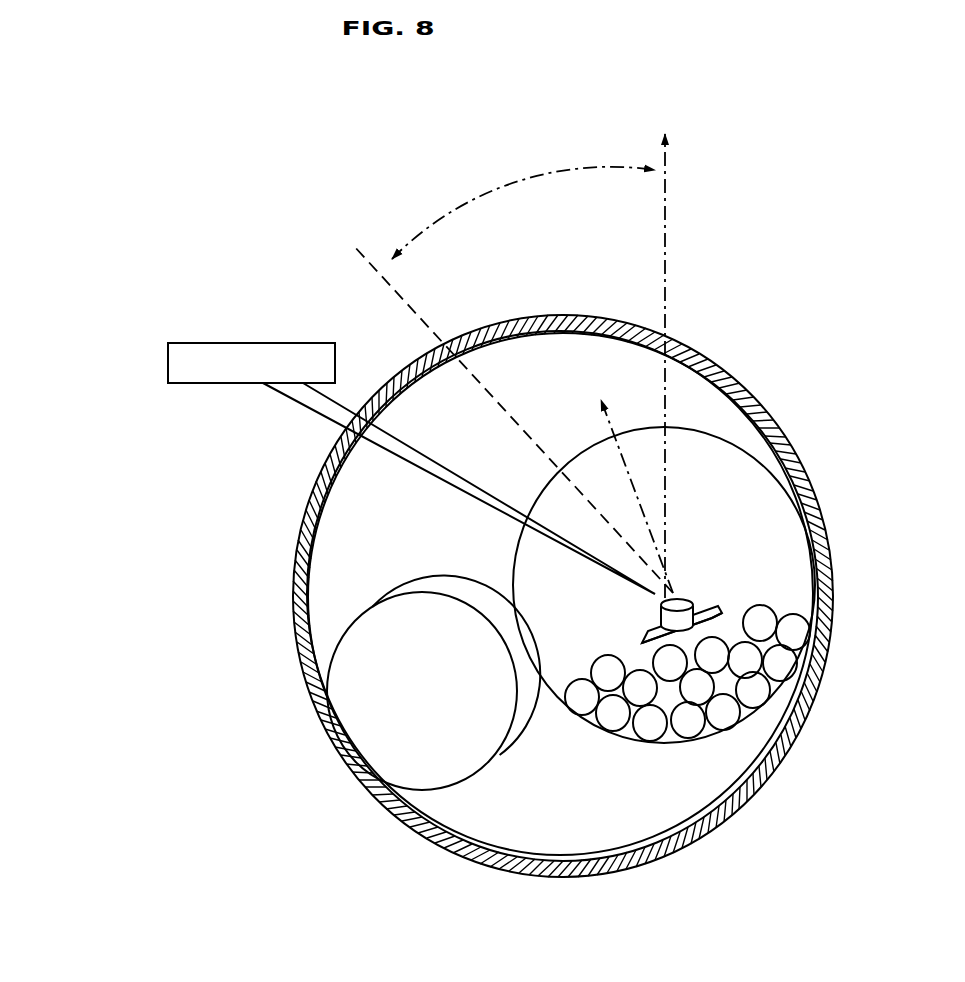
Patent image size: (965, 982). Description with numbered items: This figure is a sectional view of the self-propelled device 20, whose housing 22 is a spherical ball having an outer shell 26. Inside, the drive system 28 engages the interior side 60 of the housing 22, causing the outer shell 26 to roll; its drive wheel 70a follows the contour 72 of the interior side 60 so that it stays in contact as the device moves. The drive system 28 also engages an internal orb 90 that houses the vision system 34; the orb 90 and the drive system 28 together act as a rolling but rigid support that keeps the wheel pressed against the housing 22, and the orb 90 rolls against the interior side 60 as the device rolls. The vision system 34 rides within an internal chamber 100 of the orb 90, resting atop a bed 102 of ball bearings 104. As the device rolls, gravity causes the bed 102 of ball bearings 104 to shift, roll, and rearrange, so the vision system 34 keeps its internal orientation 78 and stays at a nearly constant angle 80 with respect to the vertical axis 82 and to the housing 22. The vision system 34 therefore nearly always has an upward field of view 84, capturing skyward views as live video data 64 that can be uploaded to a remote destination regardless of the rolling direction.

The self-propelled device 20 is at (768, 408).
The housing 22 is at (797, 458).
The outer shell 26 is at (757, 800).
The drive system 28 is at (333, 657).
The vision system 34 is at (643, 634).
The interior side 60 is at (433, 712).
The live video data 64 is at (168, 360).
The drive wheel 70a is at (490, 762).
The contour 72 is at (645, 847).
The internal orientation O 78 is at (596, 392).
The angle φ 80 is at (673, 513).
The vertical axis L_A 82 is at (710, 347).
The upward field of view 84 is at (446, 208).
The internal orb 90 is at (833, 575).
The internal chamber 100 is at (800, 548).
The bed 102 is at (728, 692).
The ball bearings 104 is at (783, 672).